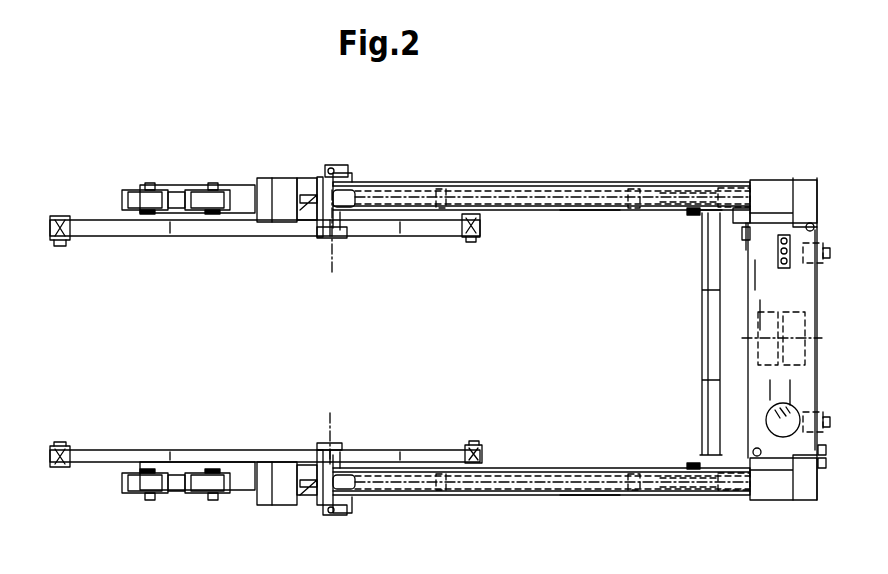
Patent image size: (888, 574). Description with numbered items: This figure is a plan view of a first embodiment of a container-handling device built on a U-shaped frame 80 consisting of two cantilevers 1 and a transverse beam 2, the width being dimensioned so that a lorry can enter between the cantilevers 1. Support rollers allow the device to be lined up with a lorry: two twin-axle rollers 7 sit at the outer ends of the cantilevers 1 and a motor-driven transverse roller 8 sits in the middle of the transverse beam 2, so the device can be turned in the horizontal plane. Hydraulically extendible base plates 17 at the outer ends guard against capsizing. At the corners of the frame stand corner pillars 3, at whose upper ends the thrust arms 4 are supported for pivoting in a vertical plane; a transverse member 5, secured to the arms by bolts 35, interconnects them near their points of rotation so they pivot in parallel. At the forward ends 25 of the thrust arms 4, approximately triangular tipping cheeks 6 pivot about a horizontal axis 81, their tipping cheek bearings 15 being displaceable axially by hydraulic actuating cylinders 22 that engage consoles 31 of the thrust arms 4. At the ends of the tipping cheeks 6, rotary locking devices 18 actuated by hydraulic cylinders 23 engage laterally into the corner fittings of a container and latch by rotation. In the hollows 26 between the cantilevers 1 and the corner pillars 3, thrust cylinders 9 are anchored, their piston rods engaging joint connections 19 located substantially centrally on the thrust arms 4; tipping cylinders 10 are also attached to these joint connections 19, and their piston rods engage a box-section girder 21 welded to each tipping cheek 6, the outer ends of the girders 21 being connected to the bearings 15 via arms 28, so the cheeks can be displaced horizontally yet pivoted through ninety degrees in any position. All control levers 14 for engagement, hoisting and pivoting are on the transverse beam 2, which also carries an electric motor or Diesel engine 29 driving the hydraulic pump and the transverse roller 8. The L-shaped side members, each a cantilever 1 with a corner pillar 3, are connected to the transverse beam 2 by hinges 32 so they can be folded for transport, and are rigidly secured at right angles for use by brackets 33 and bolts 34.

The cantilever 1 is at (585, 212).
The transverse beam 2 is at (820, 296).
The corner pillar 3 is at (805, 195).
The thrust arm 4 is at (580, 188).
The transverse member 5 is at (712, 338).
The tipping cheek 6 is at (215, 230).
The twin-axle roller 7 is at (195, 192).
The transverse roller 8 is at (810, 338).
The thrust cylinder 9 is at (682, 195).
The tipping cylinder 10 is at (418, 193).
The control lever 14 is at (795, 255).
The tipping cheek bearing 15 is at (322, 185).
The base plate 17 is at (830, 252).
The rotary locking device 18 is at (60, 240).
The joint connection 19 is at (472, 193).
The box-section girder 21 is at (278, 190).
The actuating cylinder 22 is at (333, 170).
The hydraulic cylinder 23 is at (65, 218).
The forward end 25 is at (340, 215).
The hollow 26 is at (722, 185).
The arm 28 is at (313, 193).
The electric motor or Diesel engine 29 is at (790, 412).
The console 31 is at (362, 180).
The hinge 32 is at (818, 226).
The bracket 33 is at (737, 215).
The bolt 34 is at (745, 238).
The bolt 35 is at (690, 213).
The U-shaped frame 80 is at (822, 357).
The horizontal axis 81 is at (332, 265).